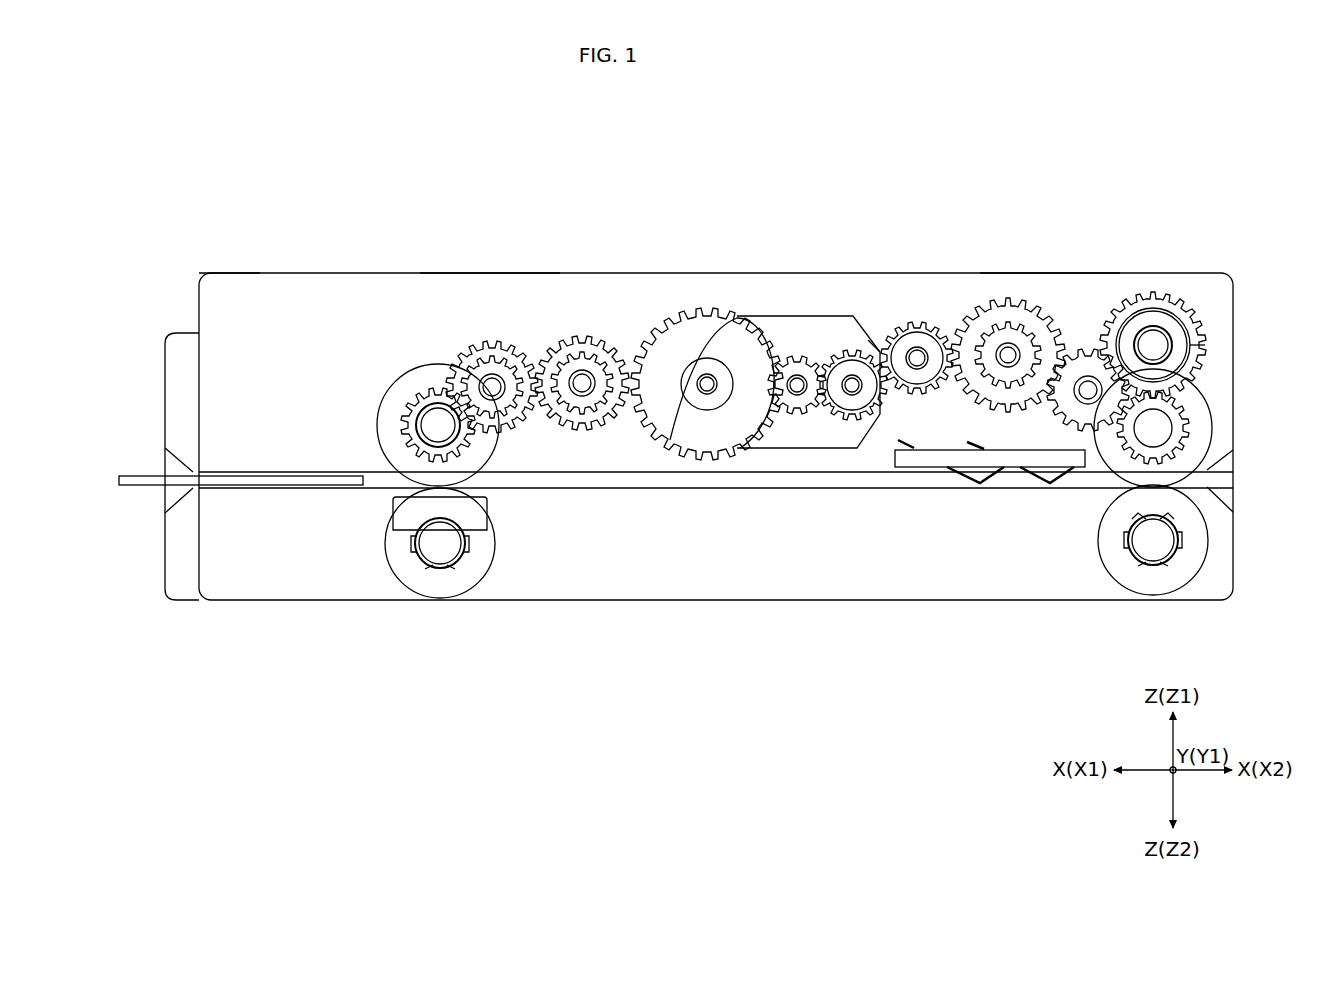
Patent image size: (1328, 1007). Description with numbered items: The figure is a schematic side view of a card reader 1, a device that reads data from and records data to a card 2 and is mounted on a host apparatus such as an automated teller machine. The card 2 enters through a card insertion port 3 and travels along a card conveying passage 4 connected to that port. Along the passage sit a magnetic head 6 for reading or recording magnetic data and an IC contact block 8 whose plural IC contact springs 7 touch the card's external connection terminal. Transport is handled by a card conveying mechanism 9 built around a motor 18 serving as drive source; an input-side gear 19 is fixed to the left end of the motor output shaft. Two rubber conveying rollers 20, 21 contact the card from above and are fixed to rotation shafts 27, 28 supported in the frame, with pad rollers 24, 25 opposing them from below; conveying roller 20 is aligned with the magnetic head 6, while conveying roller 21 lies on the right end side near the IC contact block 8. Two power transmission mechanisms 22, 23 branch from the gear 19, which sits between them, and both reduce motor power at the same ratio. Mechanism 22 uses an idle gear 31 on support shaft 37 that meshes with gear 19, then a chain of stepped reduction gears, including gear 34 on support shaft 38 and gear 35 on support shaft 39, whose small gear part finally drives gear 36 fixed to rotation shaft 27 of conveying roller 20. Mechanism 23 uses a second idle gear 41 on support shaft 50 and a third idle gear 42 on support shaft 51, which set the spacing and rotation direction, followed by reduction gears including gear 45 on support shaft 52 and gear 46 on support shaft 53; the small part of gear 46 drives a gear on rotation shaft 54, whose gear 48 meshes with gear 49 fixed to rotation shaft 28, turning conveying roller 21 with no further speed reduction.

The card reader 1 is at (1201, 124).
The card 2 is at (140, 487).
The card insertion port 3 is at (163, 463).
The card conveying passage 4 is at (745, 488).
The magnetic head 6 is at (490, 513).
The IC contact springs 7 is at (981, 486).
The IC contact block 8 is at (910, 468).
The card conveying mechanism 9 is at (332, 176).
The motor 18 is at (820, 316).
The gear 19 is at (795, 356).
The conveying roller 20 is at (408, 383).
The conveying roller 21 is at (1212, 396).
The power transmission mechanism 22 is at (492, 163).
The power transmission mechanism 23 is at (1053, 152).
The pad roller 24 is at (495, 553).
The pad roller 25 is at (1208, 536).
The rotation shaft 27 is at (410, 430).
The rotation shaft 28 is at (1183, 428).
The gear 31 is at (722, 316).
The gear 34 is at (567, 336).
The gear 35 is at (470, 336).
The gear 36 is at (407, 441).
The support shaft 37 is at (665, 441).
The support shaft 38 is at (585, 371).
The support shaft 39 is at (503, 376).
The gear 41 is at (868, 340).
The gear 42 is at (930, 346).
The gear 45 is at (1005, 298).
The gear 46 is at (1112, 318).
The gear 48 is at (1203, 333).
The gear 49 is at (1190, 437).
The support shaft 50 is at (852, 349).
The support shaft 51 is at (916, 321).
The support shaft 52 is at (1011, 344).
The support shaft 53 is at (1055, 416).
The rotation shaft 54 is at (1156, 326).